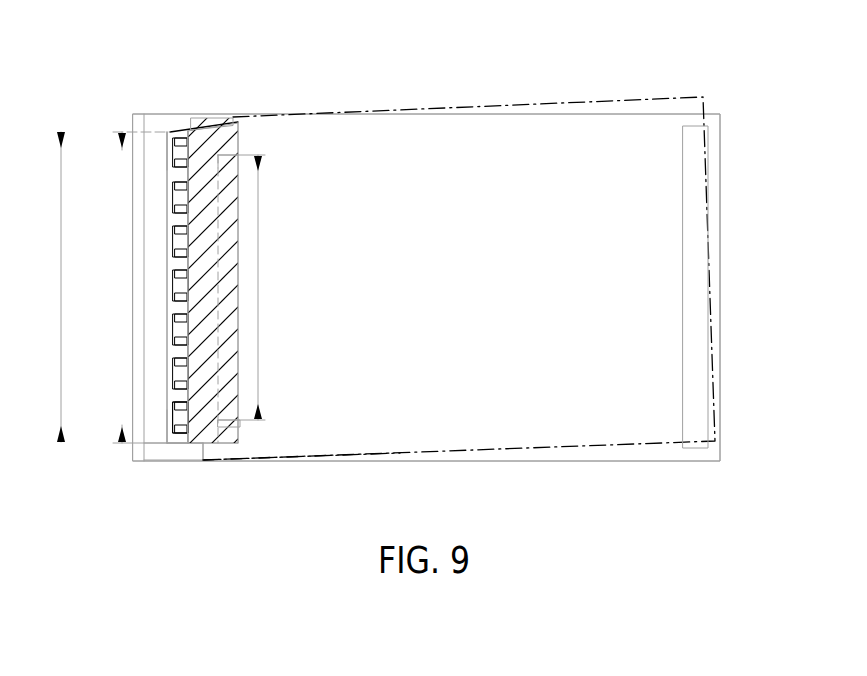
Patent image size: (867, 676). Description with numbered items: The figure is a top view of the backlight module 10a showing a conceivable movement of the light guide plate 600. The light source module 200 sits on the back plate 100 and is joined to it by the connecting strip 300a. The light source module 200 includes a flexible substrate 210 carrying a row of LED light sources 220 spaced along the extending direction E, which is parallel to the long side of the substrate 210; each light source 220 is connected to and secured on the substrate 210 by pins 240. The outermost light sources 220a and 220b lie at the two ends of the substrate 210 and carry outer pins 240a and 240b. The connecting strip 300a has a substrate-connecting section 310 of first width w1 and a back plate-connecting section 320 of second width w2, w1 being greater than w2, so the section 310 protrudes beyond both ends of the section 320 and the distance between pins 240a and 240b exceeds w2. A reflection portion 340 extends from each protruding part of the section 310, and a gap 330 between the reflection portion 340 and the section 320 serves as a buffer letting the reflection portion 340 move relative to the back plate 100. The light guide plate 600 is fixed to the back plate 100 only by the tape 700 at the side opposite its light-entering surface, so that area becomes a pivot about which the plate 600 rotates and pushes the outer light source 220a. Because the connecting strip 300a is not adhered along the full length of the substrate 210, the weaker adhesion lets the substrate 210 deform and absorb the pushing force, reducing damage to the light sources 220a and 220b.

The backlight module 10a is at (103, 47).
The back plate 100 is at (622, 125).
The light source module 200 is at (182, 512).
The substrate 210 is at (170, 412).
The light sources 220 is at (172, 377).
The light source 220a is at (165, 133).
The light source 220b is at (173, 443).
The pins 240 is at (172, 352).
The outer pin 240a is at (180, 137).
The outer pin 240b is at (183, 433).
The connecting strip 300a is at (283, 53).
The substrate-connecting section 310 is at (195, 128).
The back plate-connecting section 320 is at (238, 155).
The gap 330 is at (240, 422).
The reflection portion 340 is at (233, 118).
The light guide plate 600 is at (655, 97).
The tape 700 is at (708, 128).
The extending direction E is at (51, 287).
The first width w1 is at (130, 287).
The second width w2 is at (252, 287).